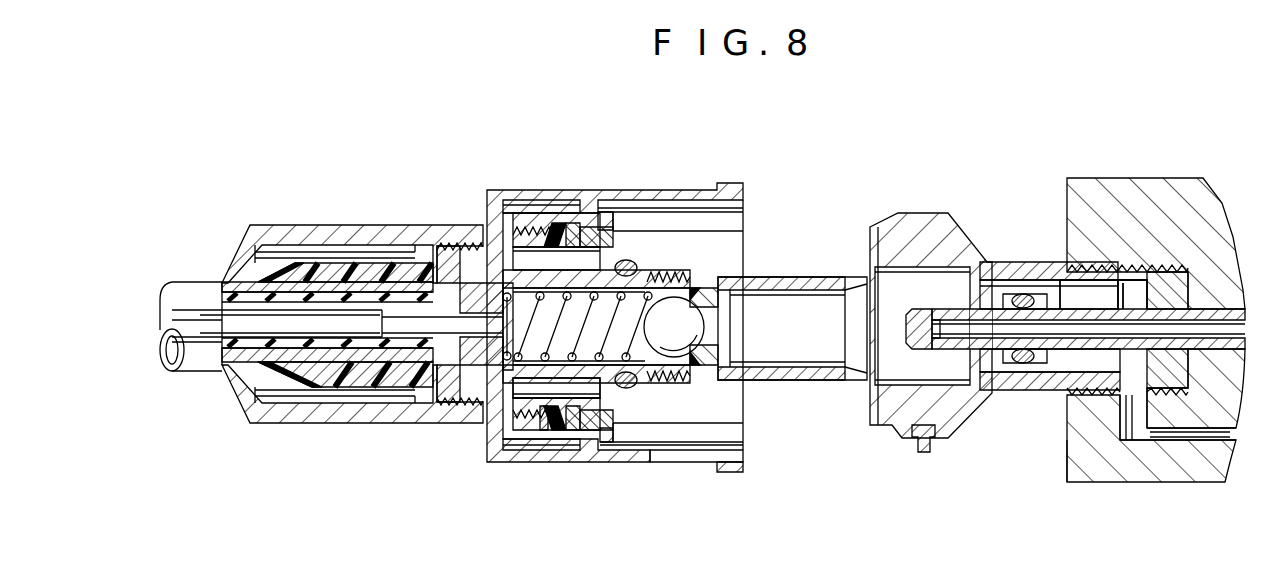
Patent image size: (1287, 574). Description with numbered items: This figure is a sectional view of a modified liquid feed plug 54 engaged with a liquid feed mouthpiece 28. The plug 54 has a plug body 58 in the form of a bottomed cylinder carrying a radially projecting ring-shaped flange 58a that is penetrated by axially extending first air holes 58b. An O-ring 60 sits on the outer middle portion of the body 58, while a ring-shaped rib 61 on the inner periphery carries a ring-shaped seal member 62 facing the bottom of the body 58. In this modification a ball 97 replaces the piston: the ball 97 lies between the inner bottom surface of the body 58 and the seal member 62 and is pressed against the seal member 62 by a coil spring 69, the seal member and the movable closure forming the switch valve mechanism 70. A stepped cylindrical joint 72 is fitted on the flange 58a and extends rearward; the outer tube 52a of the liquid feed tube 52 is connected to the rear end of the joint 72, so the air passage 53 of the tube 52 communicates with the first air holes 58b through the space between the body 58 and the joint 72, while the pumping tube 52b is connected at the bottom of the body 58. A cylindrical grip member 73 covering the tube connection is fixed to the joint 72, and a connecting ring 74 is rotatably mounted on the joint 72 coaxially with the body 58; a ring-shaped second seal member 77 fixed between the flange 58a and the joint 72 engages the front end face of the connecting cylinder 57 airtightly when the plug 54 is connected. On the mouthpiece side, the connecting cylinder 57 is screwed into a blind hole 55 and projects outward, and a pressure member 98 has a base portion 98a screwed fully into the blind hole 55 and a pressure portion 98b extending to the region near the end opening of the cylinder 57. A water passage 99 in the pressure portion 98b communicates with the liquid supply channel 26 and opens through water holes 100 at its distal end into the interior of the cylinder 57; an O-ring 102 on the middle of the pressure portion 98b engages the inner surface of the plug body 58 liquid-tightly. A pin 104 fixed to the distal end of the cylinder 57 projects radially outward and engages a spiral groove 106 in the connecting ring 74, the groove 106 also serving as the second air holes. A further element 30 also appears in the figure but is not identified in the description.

The liquid supply channel 26 is at (1238, 334).
The liquid feed mouthpiece 28 is at (1020, 468).
The passage 30 is at (1232, 438).
The liquid feed tube 52 is at (218, 368).
The outer tube 52a is at (345, 388).
The pumping tube 52b is at (238, 295).
The air passage 53 is at (266, 392).
The liquid feed plug 54 is at (482, 466).
The blind hole 55 is at (1165, 272).
The connecting cylinder 57 is at (910, 226).
The plug body 58 is at (662, 384).
The ring-shaped flange 58a is at (500, 230).
The first air holes 58b is at (582, 258).
The O-ring 60 is at (636, 268).
The ring-shaped rib 61 is at (736, 350).
The seal member 62 is at (705, 287).
The coil spring 69 is at (478, 402).
The switch valve mechanism 70 is at (630, 226).
The stepped cylindrical joint 72 is at (530, 432).
The cylindrical grip member 73 is at (352, 236).
The connecting ring 74 is at (562, 452).
The second seal member 77 is at (556, 230).
The ball 97 is at (700, 335).
The pressure member 98 is at (1215, 273).
The base portion 98a is at (1232, 398).
The pressure portion 98b is at (1108, 281).
The water passage 99 is at (1062, 340).
The water holes 100 is at (940, 343).
The O-ring 102 is at (1022, 294).
The pin 104 is at (920, 453).
The spiral groove 106 is at (740, 456).